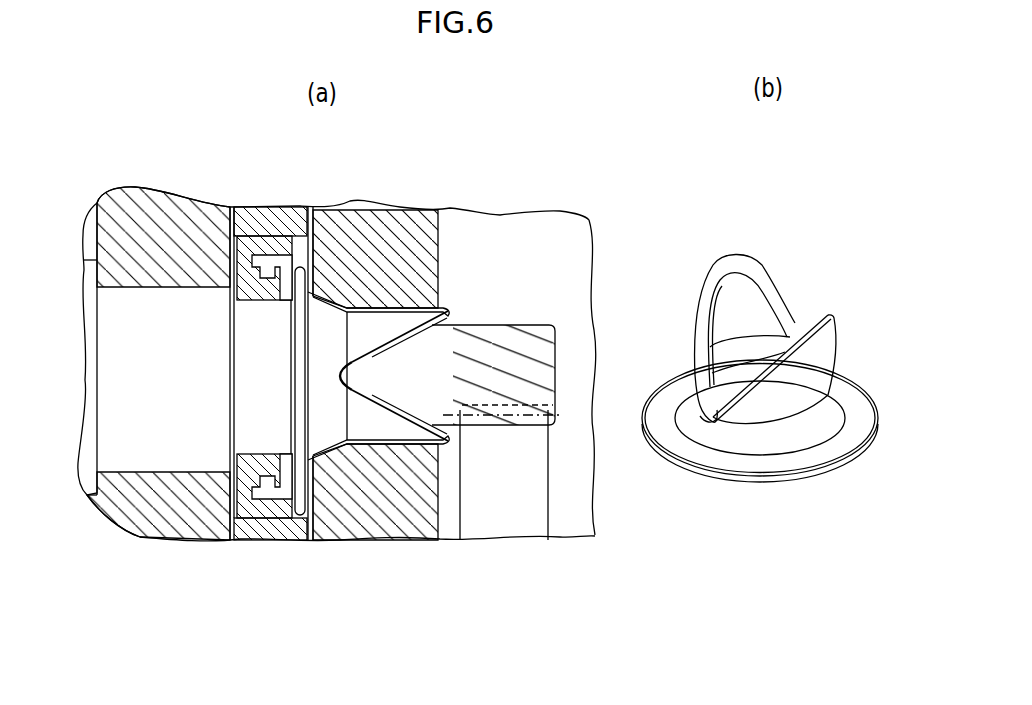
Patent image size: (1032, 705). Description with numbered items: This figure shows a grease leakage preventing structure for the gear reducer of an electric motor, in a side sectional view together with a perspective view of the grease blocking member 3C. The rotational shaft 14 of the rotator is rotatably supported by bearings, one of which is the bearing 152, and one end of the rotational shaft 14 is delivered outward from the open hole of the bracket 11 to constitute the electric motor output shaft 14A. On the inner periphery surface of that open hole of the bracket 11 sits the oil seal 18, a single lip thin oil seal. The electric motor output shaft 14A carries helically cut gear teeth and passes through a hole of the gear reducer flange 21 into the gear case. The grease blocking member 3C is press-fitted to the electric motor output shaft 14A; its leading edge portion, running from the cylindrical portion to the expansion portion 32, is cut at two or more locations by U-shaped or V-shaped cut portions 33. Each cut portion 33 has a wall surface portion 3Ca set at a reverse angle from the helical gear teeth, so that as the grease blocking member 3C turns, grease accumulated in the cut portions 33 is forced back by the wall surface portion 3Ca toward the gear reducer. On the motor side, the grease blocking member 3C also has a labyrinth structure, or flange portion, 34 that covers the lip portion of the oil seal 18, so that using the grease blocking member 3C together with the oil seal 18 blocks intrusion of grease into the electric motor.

The rotational shaft 14 is at (123, 430).
The bearing 152 is at (178, 527).
The bracket 11 is at (262, 530).
The oil seal 18 is at (267, 230).
The labyrinth structure (flange portion) 34 is at (300, 472).
The grease blocking member 3C is at (372, 323).
The gear reducer flange 21 is at (390, 515).
The wall surface portion 3Ca is at (430, 331).
The cut portion 33 is at (363, 357).
The expansion portion 32 is at (773, 437).
The electric motor output shaft 14A is at (590, 345).